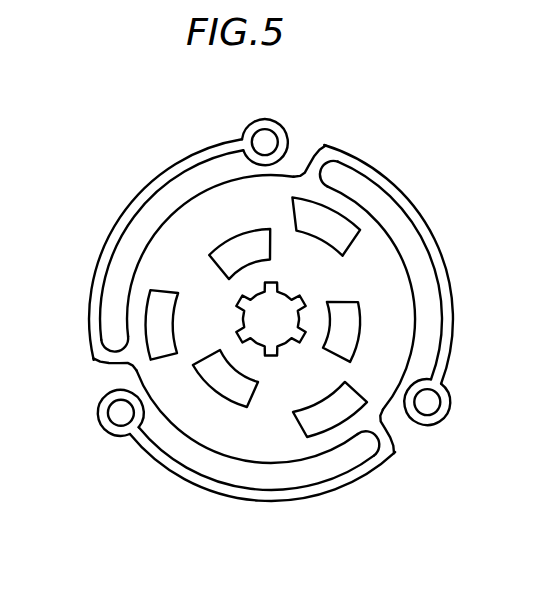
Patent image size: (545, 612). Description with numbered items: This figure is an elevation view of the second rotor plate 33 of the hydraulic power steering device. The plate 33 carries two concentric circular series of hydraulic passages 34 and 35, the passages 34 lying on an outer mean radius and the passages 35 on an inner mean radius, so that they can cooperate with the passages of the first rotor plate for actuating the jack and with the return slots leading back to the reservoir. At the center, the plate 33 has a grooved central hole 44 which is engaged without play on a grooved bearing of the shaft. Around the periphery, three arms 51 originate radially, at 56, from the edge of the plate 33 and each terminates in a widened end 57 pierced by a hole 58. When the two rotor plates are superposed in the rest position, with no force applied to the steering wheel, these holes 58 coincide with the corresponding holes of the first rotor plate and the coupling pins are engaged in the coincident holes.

The second rotor plate 33 is at (412, 199).
The hydraulic passages 34 is at (295, 211).
The hydraulic passages 35 is at (221, 251).
The grooved central hole 44 is at (273, 340).
The arms 51 is at (128, 204).
The arm root 56 is at (325, 153).
The widened end 57 is at (283, 128).
The hole 58 is at (257, 141).